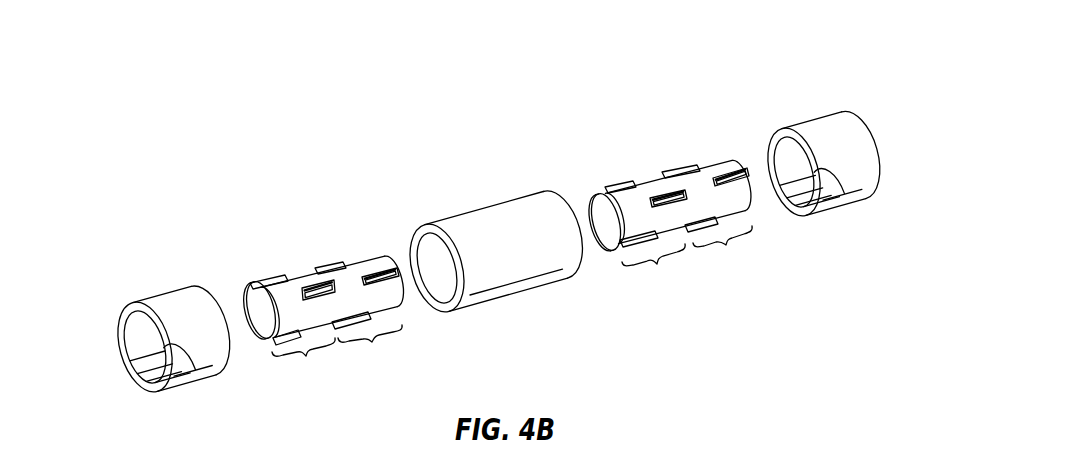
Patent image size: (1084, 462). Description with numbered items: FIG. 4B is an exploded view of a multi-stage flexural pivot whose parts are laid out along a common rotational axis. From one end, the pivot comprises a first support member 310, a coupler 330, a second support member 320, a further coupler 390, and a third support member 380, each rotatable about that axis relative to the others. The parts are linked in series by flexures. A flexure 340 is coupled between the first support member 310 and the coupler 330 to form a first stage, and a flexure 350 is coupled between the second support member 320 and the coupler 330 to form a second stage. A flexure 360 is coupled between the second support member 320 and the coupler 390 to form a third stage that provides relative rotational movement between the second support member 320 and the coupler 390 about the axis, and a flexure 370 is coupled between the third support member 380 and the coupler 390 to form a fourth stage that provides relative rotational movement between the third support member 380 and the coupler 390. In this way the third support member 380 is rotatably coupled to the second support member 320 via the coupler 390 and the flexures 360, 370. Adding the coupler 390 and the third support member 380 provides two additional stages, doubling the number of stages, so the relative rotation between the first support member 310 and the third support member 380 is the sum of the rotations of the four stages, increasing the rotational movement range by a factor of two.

The first support member 310 is at (172, 302).
The second support member 320 is at (478, 217).
The coupler 330 is at (353, 272).
The flexure 340 is at (303, 359).
The flexure 350 is at (370, 344).
The flexure 360 is at (653, 264).
The flexure 370 is at (722, 246).
The third support member 380 is at (824, 122).
The coupler 390 is at (703, 178).